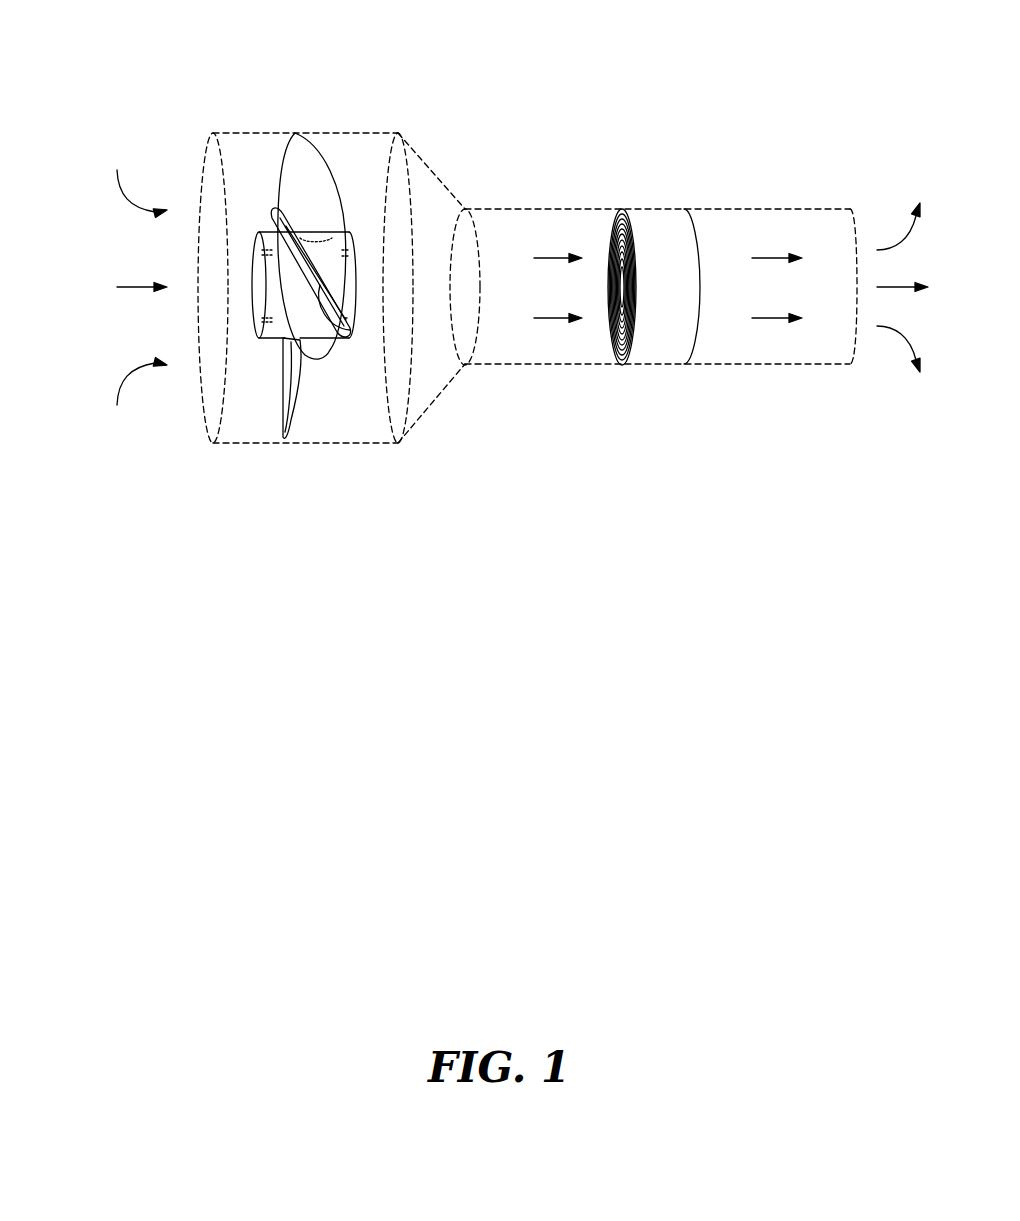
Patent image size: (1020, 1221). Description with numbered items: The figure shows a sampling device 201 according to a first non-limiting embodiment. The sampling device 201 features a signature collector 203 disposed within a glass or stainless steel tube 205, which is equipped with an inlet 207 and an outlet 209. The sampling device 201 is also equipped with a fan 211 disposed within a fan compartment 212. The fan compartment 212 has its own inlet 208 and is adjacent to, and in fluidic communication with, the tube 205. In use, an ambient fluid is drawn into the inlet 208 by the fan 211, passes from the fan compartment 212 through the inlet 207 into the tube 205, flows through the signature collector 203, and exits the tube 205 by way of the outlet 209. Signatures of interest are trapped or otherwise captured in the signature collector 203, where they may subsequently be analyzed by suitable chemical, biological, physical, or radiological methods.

The sampling device 201 is at (145, 65).
The fan compartment 212 is at (284, 108).
The inlet 208 is at (208, 158).
The fan 211 is at (320, 170).
The inlet 207 is at (448, 262).
The tube 205 is at (782, 209).
The signature collector 203 is at (700, 275).
The outlet 209 is at (857, 277).